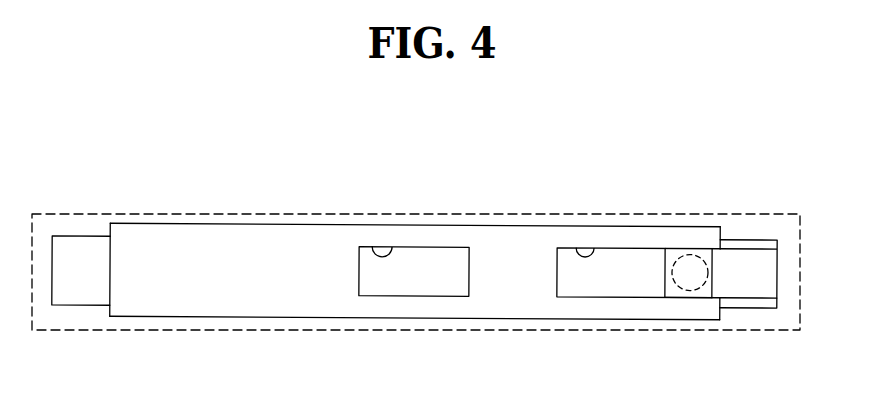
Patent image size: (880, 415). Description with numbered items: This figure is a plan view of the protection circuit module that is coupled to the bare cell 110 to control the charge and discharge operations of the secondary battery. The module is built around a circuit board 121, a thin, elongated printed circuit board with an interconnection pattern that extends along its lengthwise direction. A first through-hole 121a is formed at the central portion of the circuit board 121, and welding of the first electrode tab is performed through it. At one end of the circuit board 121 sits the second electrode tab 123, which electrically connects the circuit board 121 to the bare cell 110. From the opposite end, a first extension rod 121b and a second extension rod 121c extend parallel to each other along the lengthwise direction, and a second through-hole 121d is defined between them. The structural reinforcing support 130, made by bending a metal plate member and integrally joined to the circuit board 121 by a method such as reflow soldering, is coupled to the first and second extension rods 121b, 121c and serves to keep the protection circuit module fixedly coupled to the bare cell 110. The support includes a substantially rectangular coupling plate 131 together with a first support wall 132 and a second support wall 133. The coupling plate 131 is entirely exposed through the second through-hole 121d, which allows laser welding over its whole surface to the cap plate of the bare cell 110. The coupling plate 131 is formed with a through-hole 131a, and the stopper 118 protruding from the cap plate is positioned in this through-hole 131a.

The bare cell 110 is at (207, 214).
The stopper 118 is at (697, 292).
The circuit board 121 is at (461, 225).
The first through-hole 121a is at (395, 250).
The first extension rod 121b is at (583, 312).
The second extension rod 121c is at (698, 230).
The second through-hole 121d is at (600, 248).
The second electrode tab 123 is at (78, 245).
The structural reinforcing support 130 is at (787, 228).
The coupling plate 131 is at (639, 258).
The through-hole 131a is at (673, 297).
The first support wall 132 is at (752, 307).
The second support wall 133 is at (750, 242).